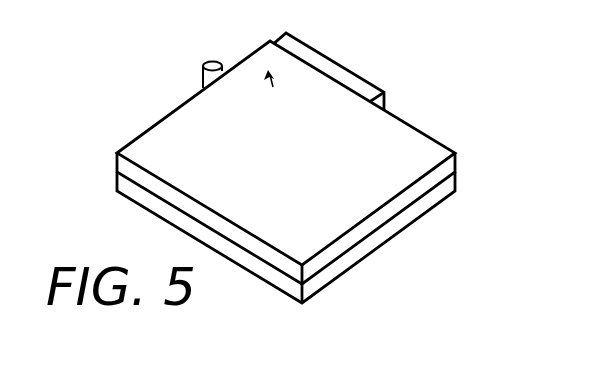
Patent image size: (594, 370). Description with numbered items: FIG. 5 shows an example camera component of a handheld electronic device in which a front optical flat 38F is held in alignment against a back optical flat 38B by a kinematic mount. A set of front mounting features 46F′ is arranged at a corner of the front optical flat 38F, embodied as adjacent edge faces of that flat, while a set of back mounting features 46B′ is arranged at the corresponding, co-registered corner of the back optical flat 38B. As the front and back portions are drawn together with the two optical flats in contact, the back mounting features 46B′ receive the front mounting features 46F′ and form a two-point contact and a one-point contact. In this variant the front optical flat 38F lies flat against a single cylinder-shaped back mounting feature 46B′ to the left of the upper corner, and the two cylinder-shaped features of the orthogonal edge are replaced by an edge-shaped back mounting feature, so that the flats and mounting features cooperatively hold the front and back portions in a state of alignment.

The front optical flat 38F is at (458, 165).
The back optical flat 38B is at (458, 177).
The cylinder-shaped back mounting feature 46B′ is at (202, 77).
The front mounting feature 46F′ is at (226, 77).